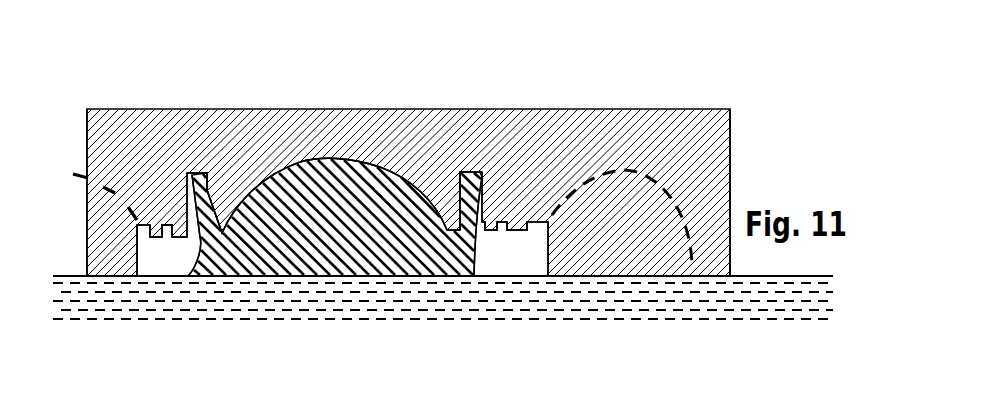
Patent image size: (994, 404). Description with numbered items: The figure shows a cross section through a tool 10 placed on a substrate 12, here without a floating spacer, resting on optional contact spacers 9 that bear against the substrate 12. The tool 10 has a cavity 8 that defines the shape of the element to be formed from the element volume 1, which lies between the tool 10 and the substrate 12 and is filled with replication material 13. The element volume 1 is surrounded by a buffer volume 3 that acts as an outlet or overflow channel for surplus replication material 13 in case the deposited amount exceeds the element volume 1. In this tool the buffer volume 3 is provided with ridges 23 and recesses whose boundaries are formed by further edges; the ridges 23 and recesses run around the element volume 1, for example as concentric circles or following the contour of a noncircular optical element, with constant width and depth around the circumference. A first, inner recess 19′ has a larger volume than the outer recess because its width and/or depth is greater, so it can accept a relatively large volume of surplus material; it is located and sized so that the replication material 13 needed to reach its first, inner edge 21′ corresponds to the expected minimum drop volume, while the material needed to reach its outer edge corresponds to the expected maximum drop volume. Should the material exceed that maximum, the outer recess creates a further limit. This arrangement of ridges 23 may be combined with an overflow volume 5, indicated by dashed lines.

The element volume 1 is at (298, 262).
The buffer volume 3 is at (184, 266).
The overflow volume 5 is at (641, 170).
The cavity 8 is at (273, 120).
The contact spacer 9 is at (103, 266).
The tool 10 is at (718, 135).
The substrate 12 is at (369, 299).
The replication material 13 is at (335, 160).
The inner recess 19′ is at (195, 175).
The inner edge of the inner recess 21′ is at (458, 176).
The ridges 23 is at (222, 232).